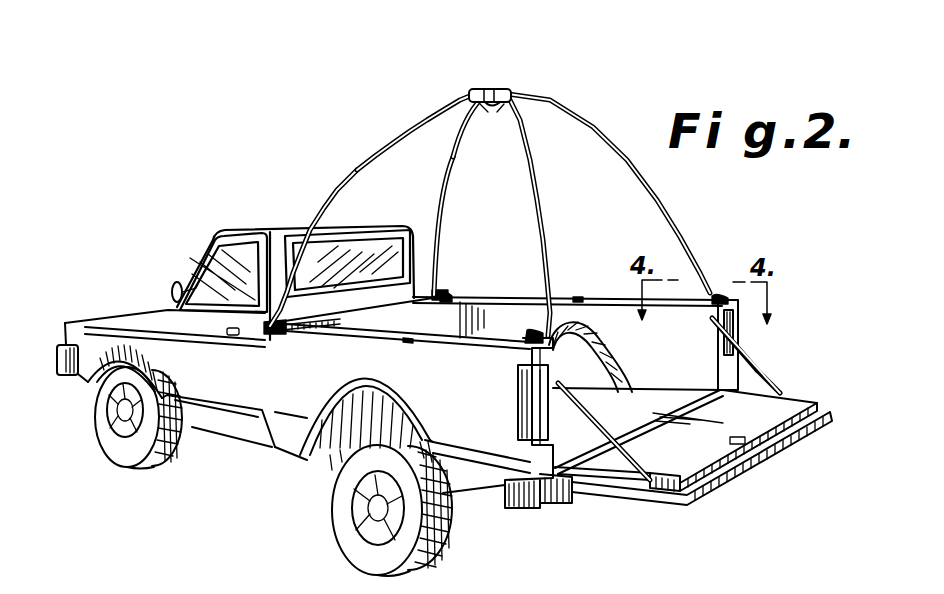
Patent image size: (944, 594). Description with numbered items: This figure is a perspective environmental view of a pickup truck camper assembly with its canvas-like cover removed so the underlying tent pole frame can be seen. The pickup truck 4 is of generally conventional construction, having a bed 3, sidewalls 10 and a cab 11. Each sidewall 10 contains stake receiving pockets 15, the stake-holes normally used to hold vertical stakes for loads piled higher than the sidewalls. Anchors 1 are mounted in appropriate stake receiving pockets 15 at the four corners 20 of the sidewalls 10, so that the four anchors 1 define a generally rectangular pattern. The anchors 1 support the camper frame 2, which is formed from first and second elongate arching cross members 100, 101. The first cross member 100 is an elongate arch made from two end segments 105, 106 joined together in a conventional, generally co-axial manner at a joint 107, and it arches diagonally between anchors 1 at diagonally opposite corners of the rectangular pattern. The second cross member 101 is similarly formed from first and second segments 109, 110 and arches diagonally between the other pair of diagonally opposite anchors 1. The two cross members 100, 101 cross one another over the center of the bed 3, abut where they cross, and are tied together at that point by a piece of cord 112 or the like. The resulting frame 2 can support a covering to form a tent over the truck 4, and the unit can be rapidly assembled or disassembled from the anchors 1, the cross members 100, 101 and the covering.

The anchor 1 is at (274, 333).
The camper frame 2 is at (490, 192).
The bed 3 is at (646, 402).
The pickup truck 4 is at (121, 317).
The sidewall 10 is at (473, 392).
The cab 11 is at (262, 232).
The stake receiving pocket 15 is at (448, 298).
The corner 20 is at (430, 302).
The first cross member 100 is at (453, 165).
The second cross member 101 is at (354, 173).
The end segment 105 is at (442, 206).
The end segment 106 is at (536, 175).
The joint 107 is at (506, 112).
The first segment 109 is at (389, 144).
The second segment 110 is at (598, 128).
The cord 112 is at (489, 88).